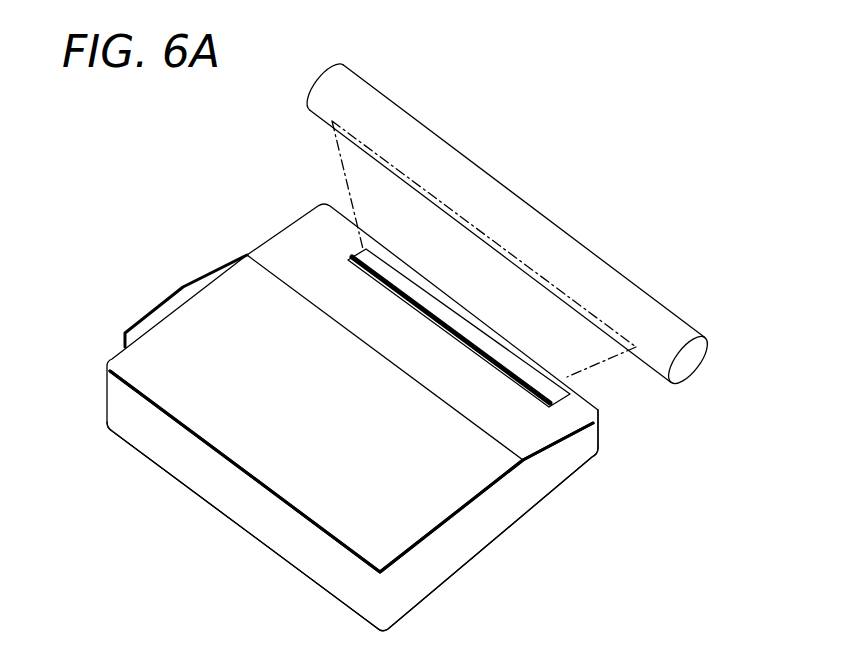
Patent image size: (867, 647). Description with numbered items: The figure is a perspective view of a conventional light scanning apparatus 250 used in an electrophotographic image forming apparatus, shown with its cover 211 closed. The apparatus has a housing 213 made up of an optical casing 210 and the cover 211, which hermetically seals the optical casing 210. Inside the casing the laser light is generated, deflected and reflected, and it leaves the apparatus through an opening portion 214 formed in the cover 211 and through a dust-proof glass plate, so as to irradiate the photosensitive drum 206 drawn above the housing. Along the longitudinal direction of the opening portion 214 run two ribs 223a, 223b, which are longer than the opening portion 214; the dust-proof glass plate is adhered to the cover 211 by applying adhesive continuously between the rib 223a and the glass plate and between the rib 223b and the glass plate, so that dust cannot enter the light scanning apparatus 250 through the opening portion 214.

The photosensitive drum 206 is at (383, 112).
The optical casing 210 is at (371, 417).
The cover 211 is at (442, 490).
The housing 213 is at (433, 562).
The opening portion 214 is at (598, 410).
The rib 223a is at (512, 374).
The rib 223b is at (507, 377).
The light scanning apparatus 250 is at (371, 417).